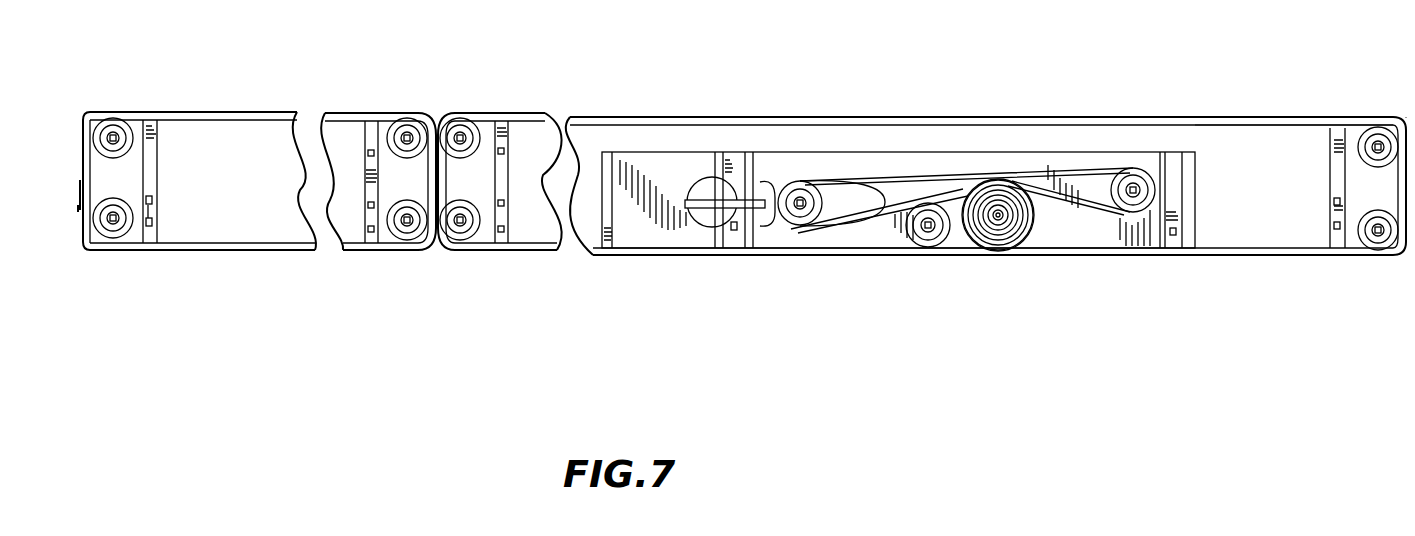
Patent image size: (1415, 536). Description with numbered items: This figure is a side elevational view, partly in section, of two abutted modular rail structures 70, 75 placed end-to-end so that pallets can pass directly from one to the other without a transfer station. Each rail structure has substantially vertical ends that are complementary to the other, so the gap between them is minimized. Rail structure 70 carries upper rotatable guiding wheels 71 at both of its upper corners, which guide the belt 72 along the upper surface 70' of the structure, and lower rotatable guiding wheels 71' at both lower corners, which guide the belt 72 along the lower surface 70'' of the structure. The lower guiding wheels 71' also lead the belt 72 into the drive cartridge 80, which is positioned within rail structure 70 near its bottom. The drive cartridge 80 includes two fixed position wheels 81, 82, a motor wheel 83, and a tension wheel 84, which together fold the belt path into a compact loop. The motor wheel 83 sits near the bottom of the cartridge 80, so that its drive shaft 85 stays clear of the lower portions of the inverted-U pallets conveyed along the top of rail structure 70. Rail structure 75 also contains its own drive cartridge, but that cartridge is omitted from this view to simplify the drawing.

The rail structure 70 is at (988, 91).
The upper surface 70' is at (981, 120).
The lower surface 70'' is at (924, 221).
The upper rotatable guiding wheels 71 is at (745, 112).
The lower rotatable guiding wheels 71' is at (745, 244).
The belt 72 is at (441, 182).
The rail structure 75 is at (238, 84).
The drive cartridge 80 is at (1012, 262).
The fixed position wheel 81 is at (927, 245).
The fixed position wheel 82 is at (1135, 176).
The motor wheel 83 is at (997, 192).
The tension wheel 84 is at (796, 214).
The drive shaft 85 is at (995, 222).